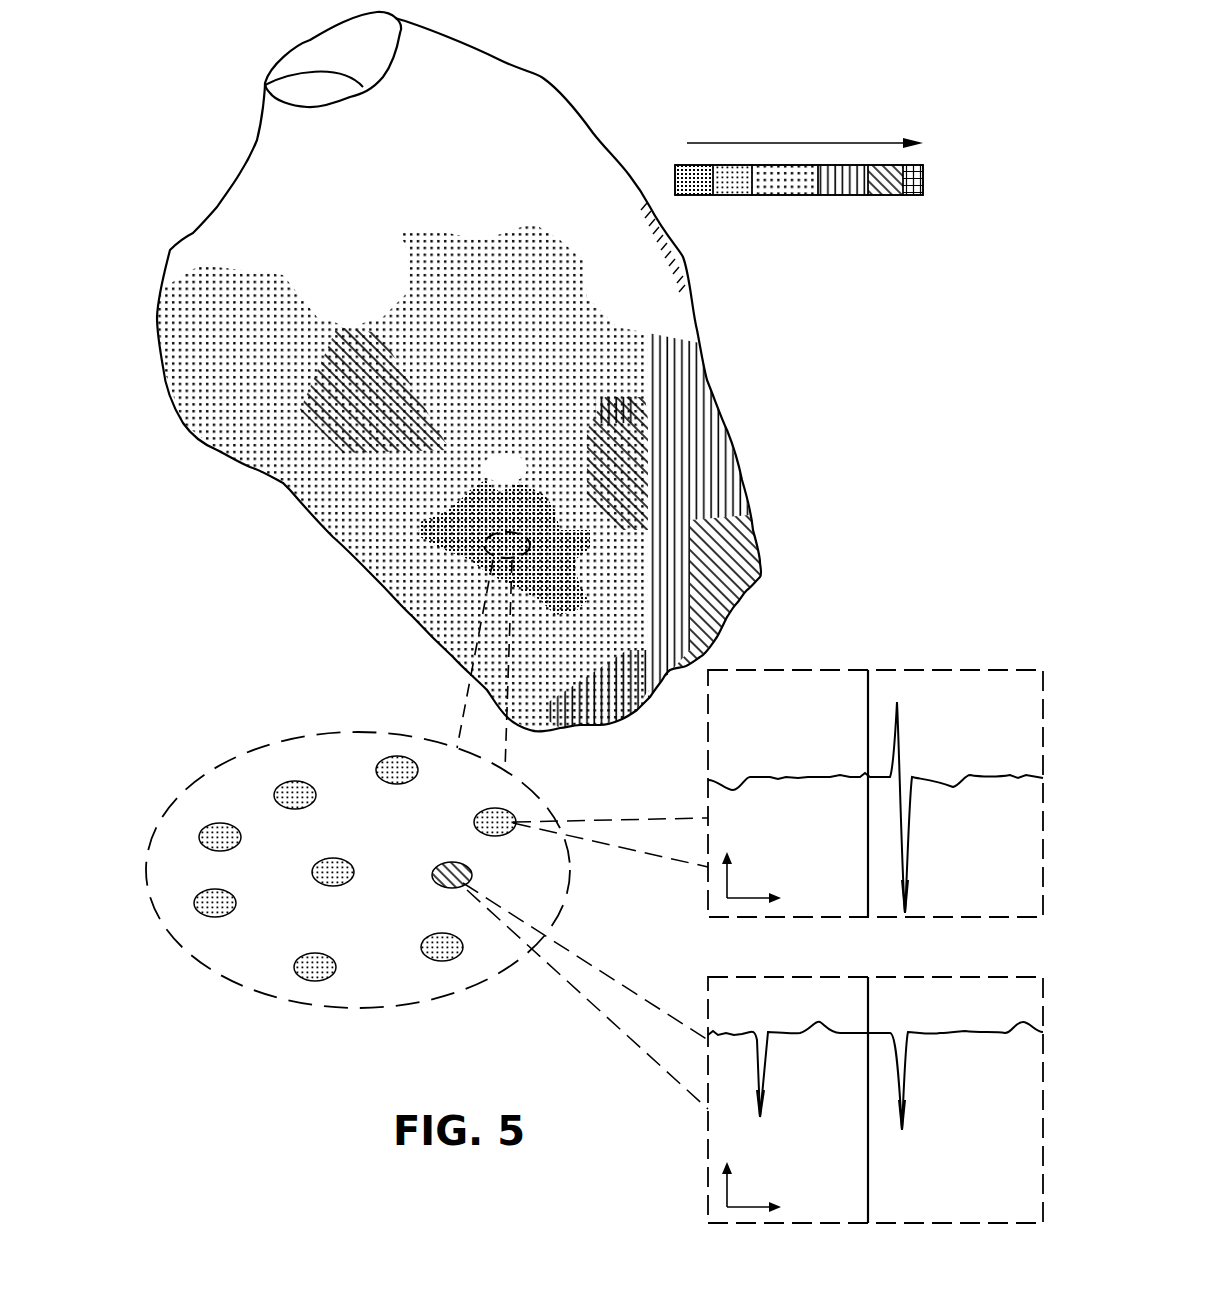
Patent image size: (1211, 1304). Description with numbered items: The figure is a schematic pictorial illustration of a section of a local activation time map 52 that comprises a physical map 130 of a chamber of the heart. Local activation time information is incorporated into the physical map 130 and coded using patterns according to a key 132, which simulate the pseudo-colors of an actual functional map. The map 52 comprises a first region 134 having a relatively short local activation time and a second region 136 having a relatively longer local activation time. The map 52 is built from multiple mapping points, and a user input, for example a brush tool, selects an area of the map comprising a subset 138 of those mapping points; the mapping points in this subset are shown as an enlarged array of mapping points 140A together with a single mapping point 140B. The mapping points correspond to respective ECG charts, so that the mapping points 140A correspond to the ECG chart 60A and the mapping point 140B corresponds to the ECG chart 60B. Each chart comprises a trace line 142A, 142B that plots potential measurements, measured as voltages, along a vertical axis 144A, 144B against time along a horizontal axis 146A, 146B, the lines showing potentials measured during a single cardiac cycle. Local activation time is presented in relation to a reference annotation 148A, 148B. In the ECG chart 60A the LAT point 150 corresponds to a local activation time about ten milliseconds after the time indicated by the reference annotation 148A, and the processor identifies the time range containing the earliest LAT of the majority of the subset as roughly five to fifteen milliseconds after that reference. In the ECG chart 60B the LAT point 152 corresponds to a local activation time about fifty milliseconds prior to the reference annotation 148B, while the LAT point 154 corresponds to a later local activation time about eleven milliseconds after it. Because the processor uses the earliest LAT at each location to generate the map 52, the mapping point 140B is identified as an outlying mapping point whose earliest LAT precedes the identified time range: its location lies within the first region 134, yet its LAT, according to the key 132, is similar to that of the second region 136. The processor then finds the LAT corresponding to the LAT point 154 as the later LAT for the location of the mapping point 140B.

The LAT map 52 is at (760, 450).
The ECG chart 60A is at (1010, 670).
The ECG chart 60B is at (1010, 977).
The physical map 130 is at (570, 100).
The key 132 is at (807, 212).
The first region 134 is at (430, 547).
The second region 136 is at (347, 423).
The subset of mapping points 138 is at (493, 560).
The mapping points 140A is at (293, 783).
The mapping point 140B is at (452, 863).
The line 142A is at (807, 777).
The line 142B is at (818, 1022).
The vertical axis 144A is at (730, 860).
The vertical axis 144B is at (730, 1167).
The horizontal axis 146A is at (775, 898).
The horizontal axis 146B is at (775, 1207).
The reference annotation 148A is at (872, 685).
The reference annotation 148B is at (870, 995).
The LAT point 150 is at (920, 900).
The LAT point 152 is at (773, 1100).
The LAT point 154 is at (921, 1139).